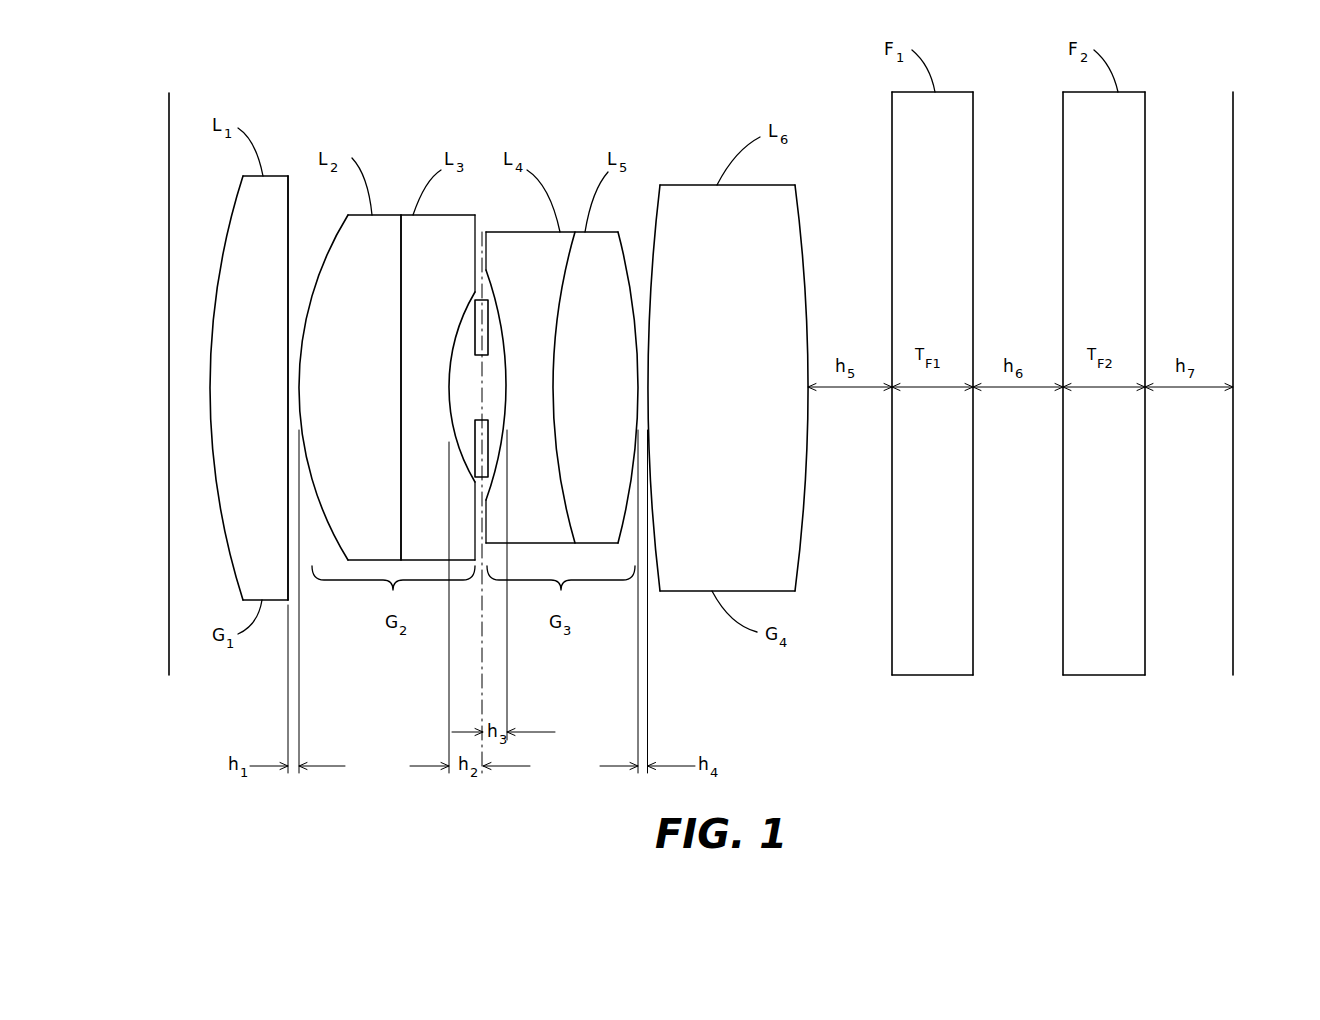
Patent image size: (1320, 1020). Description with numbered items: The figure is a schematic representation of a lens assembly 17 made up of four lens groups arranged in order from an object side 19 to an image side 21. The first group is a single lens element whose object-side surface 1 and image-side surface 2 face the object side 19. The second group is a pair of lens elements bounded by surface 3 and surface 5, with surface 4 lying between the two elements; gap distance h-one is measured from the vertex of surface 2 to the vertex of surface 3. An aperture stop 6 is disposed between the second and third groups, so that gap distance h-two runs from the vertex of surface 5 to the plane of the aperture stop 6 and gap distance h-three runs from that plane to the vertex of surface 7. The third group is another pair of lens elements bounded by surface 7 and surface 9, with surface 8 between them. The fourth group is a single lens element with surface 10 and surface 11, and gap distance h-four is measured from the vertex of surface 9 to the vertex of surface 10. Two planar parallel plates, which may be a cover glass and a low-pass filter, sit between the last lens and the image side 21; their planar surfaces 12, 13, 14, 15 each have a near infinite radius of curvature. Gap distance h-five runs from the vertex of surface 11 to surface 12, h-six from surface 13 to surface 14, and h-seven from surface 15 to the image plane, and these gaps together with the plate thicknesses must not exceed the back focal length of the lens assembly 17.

The surface 1 is at (226, 247).
The surface 2 is at (286, 305).
The surface 3 is at (343, 218).
The surface 4 is at (400, 306).
The surface 5 is at (465, 308).
The aperture stop 6 is at (477, 345).
The surface 7 is at (494, 300).
The surface 8 is at (556, 428).
The surface 9 is at (636, 343).
The surface 10 is at (650, 330).
The surface 11 is at (805, 445).
The surface 12 is at (891, 183).
The surface 13 is at (974, 190).
The surface 14 is at (1062, 603).
The surface 15 is at (1146, 598).
The lens assembly 17 is at (349, 92).
The object side 19 is at (168, 160).
The image side 21 is at (1235, 107).